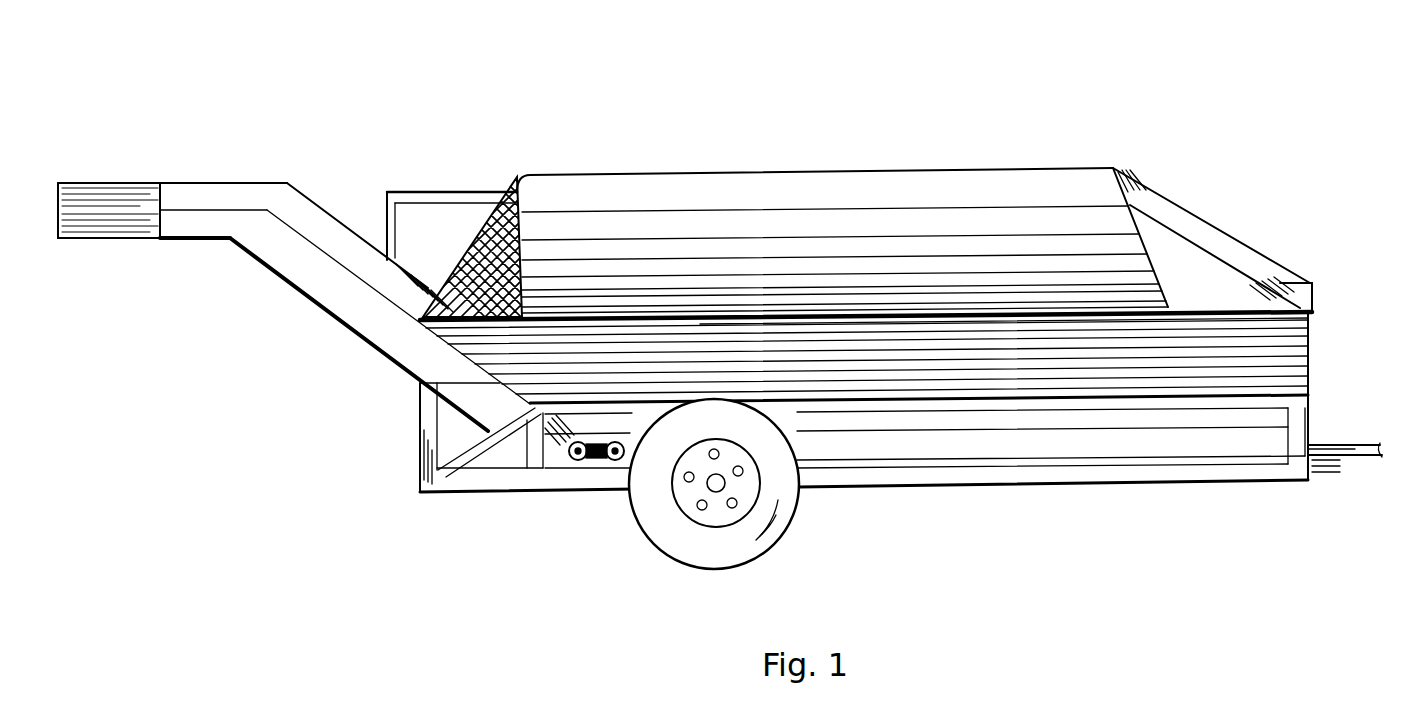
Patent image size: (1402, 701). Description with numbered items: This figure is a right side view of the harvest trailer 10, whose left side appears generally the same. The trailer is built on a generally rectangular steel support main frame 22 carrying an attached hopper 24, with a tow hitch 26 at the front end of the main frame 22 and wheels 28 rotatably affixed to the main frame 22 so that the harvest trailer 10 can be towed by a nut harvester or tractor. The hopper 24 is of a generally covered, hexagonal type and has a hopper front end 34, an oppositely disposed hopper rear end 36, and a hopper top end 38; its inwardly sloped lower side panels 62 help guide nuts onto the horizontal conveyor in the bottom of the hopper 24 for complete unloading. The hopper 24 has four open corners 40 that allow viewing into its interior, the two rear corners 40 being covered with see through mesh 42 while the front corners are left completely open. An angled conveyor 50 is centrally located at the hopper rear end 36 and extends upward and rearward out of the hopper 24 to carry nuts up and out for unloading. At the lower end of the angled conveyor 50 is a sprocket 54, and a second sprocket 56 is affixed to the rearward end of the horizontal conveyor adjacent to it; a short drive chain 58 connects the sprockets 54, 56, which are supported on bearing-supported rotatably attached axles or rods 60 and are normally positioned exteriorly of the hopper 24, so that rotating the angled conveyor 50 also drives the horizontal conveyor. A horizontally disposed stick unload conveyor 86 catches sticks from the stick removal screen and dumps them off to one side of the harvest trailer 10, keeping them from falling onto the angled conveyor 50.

The harvest trailer 10 is at (745, 168).
The main frame 22 is at (418, 473).
The hopper 24 is at (1045, 187).
The tow hitch 26 is at (1328, 482).
The wheels 28 is at (715, 571).
The hopper front end 34 is at (1312, 333).
The hopper rear end 36 is at (440, 337).
The hopper top end 38 is at (882, 170).
The open corners 40 is at (507, 175).
The see through mesh 42 is at (527, 172).
The angled conveyor 50 is at (270, 244).
The sprocket 54 is at (570, 468).
The second sprocket 56 is at (615, 461).
The drive chain 58 is at (592, 460).
The axles or rods 60 is at (542, 463).
The lower side panels 62 is at (930, 330).
The stick unload conveyor 86 is at (418, 190).